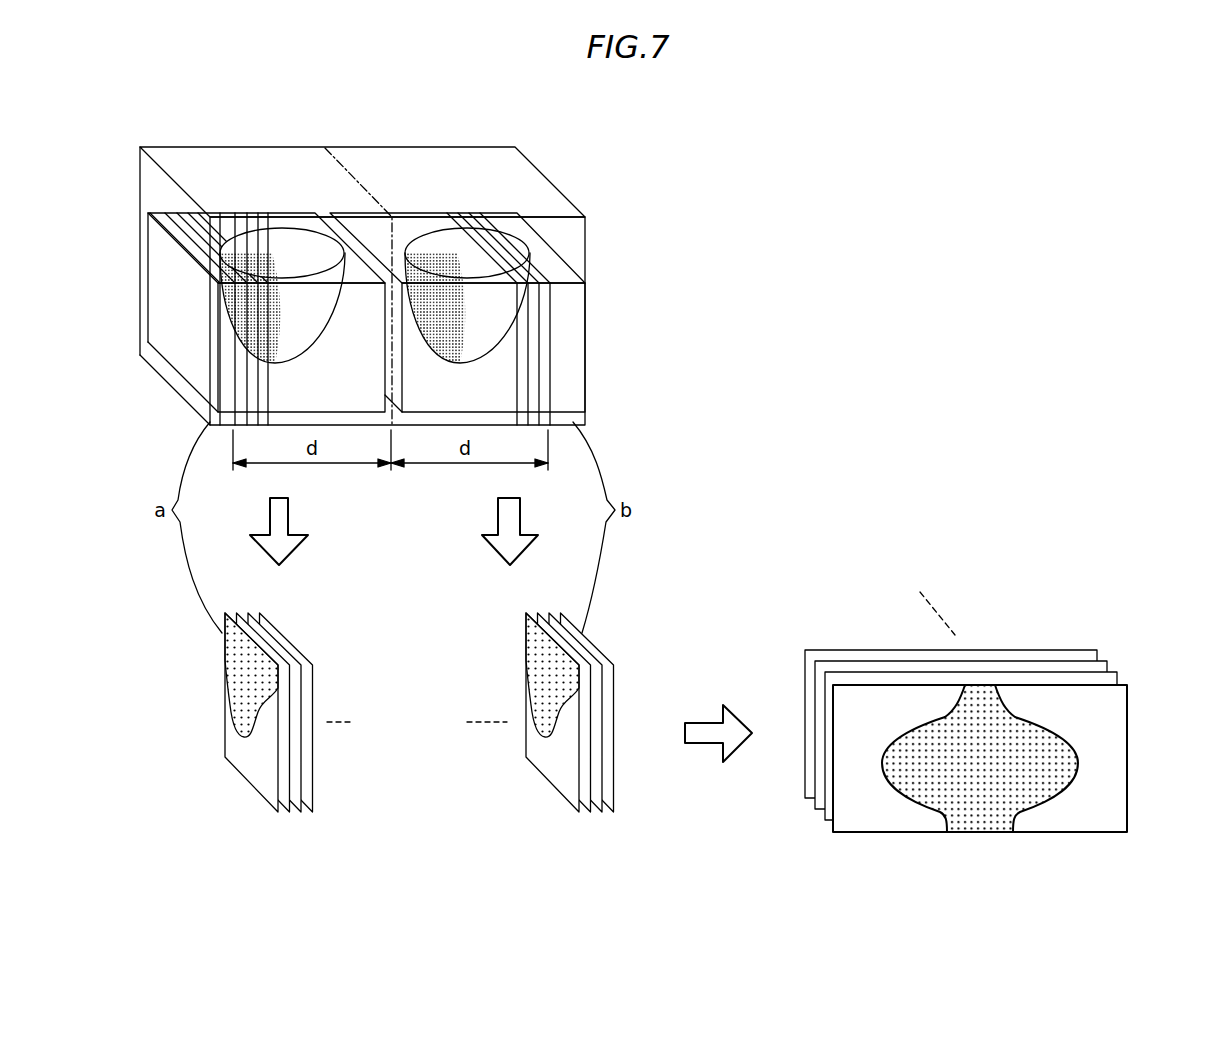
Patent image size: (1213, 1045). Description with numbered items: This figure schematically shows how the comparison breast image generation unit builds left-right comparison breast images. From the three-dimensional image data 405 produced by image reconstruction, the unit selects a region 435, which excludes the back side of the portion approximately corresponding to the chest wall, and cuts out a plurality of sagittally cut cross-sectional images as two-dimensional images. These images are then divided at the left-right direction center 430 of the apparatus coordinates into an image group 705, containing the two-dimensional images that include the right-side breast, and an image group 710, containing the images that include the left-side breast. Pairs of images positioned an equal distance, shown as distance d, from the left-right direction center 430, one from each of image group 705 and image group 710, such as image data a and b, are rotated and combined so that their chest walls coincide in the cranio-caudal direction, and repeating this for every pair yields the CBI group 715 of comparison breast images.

The three-dimensional image data 405 is at (155, 387).
The left-right direction center 430 is at (360, 178).
The region 435 is at (147, 228).
The image group 705 is at (258, 790).
The image group 710 is at (559, 790).
The CBI group 715 is at (1127, 731).